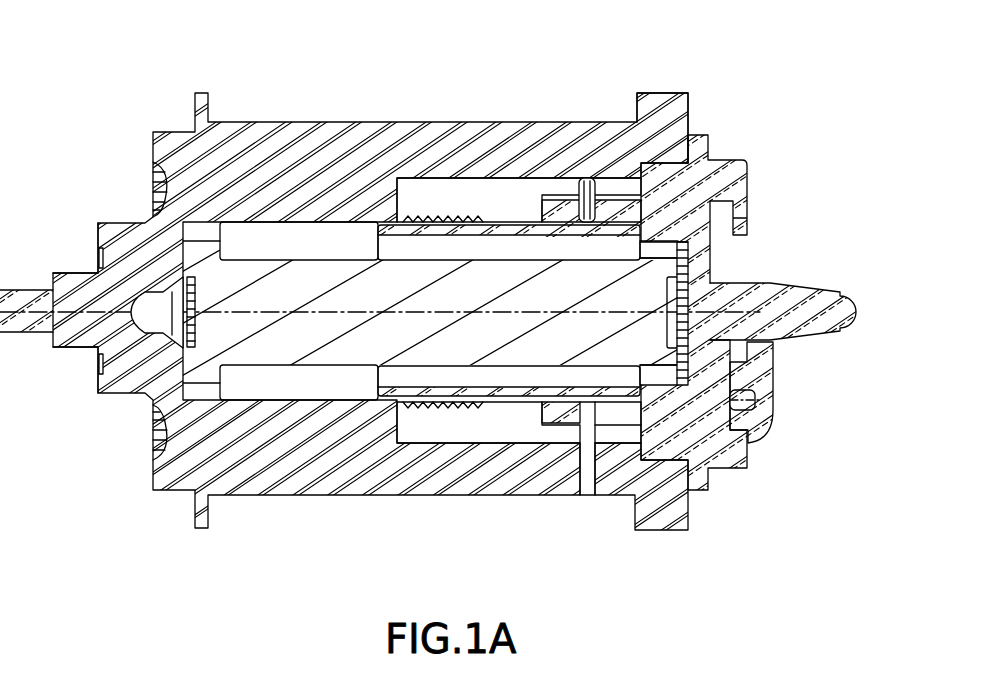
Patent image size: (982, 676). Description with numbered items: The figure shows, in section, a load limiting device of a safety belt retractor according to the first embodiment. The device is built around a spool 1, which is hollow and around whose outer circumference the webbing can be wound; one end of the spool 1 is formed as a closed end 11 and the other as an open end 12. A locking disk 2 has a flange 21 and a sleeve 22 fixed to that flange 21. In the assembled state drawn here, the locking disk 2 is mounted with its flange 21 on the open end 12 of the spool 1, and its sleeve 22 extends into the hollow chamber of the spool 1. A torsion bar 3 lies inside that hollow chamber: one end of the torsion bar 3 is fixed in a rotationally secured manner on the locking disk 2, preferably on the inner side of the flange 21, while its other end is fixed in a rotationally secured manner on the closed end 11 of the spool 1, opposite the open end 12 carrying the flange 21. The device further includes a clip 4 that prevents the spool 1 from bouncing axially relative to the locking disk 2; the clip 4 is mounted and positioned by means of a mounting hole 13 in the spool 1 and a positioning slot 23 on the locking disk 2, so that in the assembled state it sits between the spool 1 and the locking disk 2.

The spool 1 is at (354, 150).
The closed end 11 is at (120, 193).
The open end 12 is at (678, 77).
The mounting hole 13 is at (590, 480).
The locking disk 2 is at (804, 317).
The flange 21 is at (679, 206).
The sleeve 22 is at (473, 403).
The positioning slot 23 is at (590, 410).
The torsion bar 3 is at (150, 398).
The clip 4 is at (589, 185).